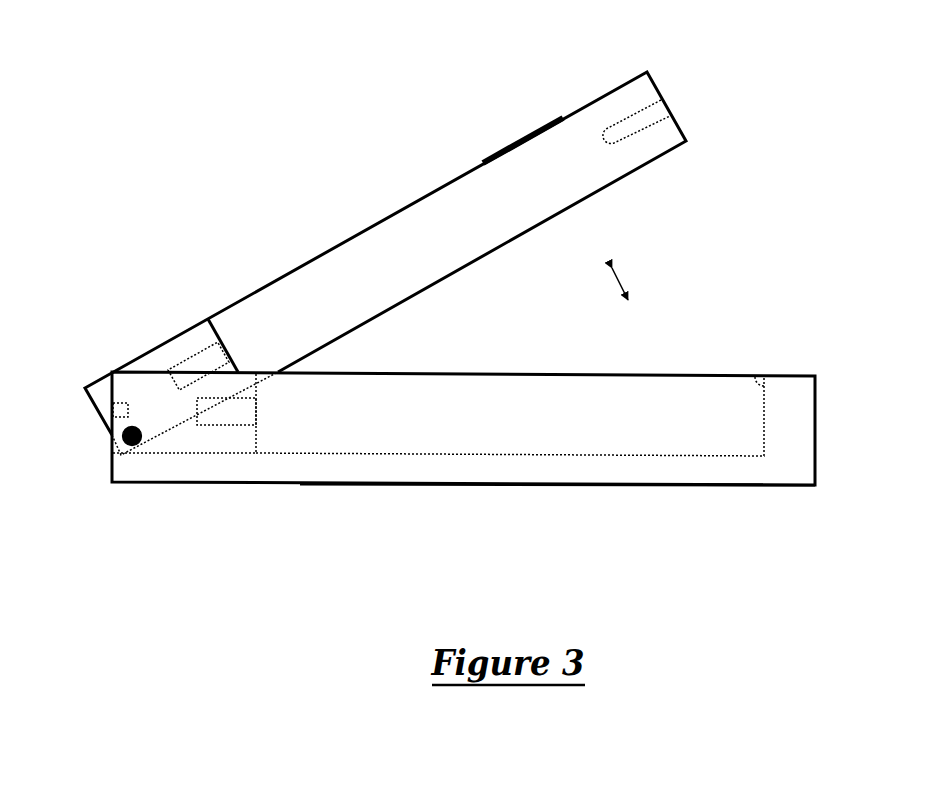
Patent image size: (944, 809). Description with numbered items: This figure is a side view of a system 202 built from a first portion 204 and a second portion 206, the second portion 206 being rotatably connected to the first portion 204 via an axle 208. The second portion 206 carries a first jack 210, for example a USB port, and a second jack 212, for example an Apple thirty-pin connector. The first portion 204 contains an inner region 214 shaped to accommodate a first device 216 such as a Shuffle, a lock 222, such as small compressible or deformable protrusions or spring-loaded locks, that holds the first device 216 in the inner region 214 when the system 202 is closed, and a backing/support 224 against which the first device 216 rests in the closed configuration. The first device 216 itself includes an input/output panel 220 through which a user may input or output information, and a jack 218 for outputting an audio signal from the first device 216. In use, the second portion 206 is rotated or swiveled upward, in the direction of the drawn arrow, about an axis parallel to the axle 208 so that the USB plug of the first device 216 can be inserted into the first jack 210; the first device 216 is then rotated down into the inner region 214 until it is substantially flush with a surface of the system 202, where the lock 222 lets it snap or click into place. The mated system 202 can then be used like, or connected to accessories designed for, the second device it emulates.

The system 202 is at (217, 143).
The first portion 204 is at (817, 393).
The second portion 206 is at (168, 338).
The axle 208 is at (133, 443).
The first jack 210 is at (220, 423).
The second jack 212 is at (103, 423).
The inner region 214 is at (627, 428).
The first device 216 is at (435, 187).
The jack 218 is at (651, 123).
The input/output panel 220 is at (537, 128).
The lock 222 is at (755, 382).
The backing/support 224 is at (582, 473).